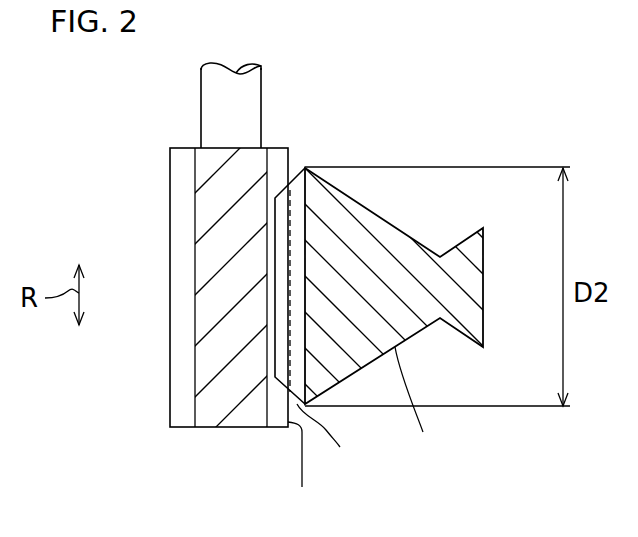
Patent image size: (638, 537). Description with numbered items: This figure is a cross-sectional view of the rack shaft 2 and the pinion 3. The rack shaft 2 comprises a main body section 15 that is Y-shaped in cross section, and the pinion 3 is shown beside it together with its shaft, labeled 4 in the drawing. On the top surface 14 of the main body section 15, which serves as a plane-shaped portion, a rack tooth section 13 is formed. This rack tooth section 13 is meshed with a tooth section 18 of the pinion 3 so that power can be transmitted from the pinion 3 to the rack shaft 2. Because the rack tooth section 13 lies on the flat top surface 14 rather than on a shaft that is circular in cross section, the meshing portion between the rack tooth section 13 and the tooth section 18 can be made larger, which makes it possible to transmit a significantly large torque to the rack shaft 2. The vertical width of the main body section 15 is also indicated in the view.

The rack shaft 2 is at (387, 222).
The pinion 3 is at (284, 147).
The shaft 4 is at (200, 117).
The rack tooth section 13 is at (331, 442).
The top surface 14 is at (305, 223).
The main body section 15 is at (420, 406).
The tooth section 18 is at (304, 470).